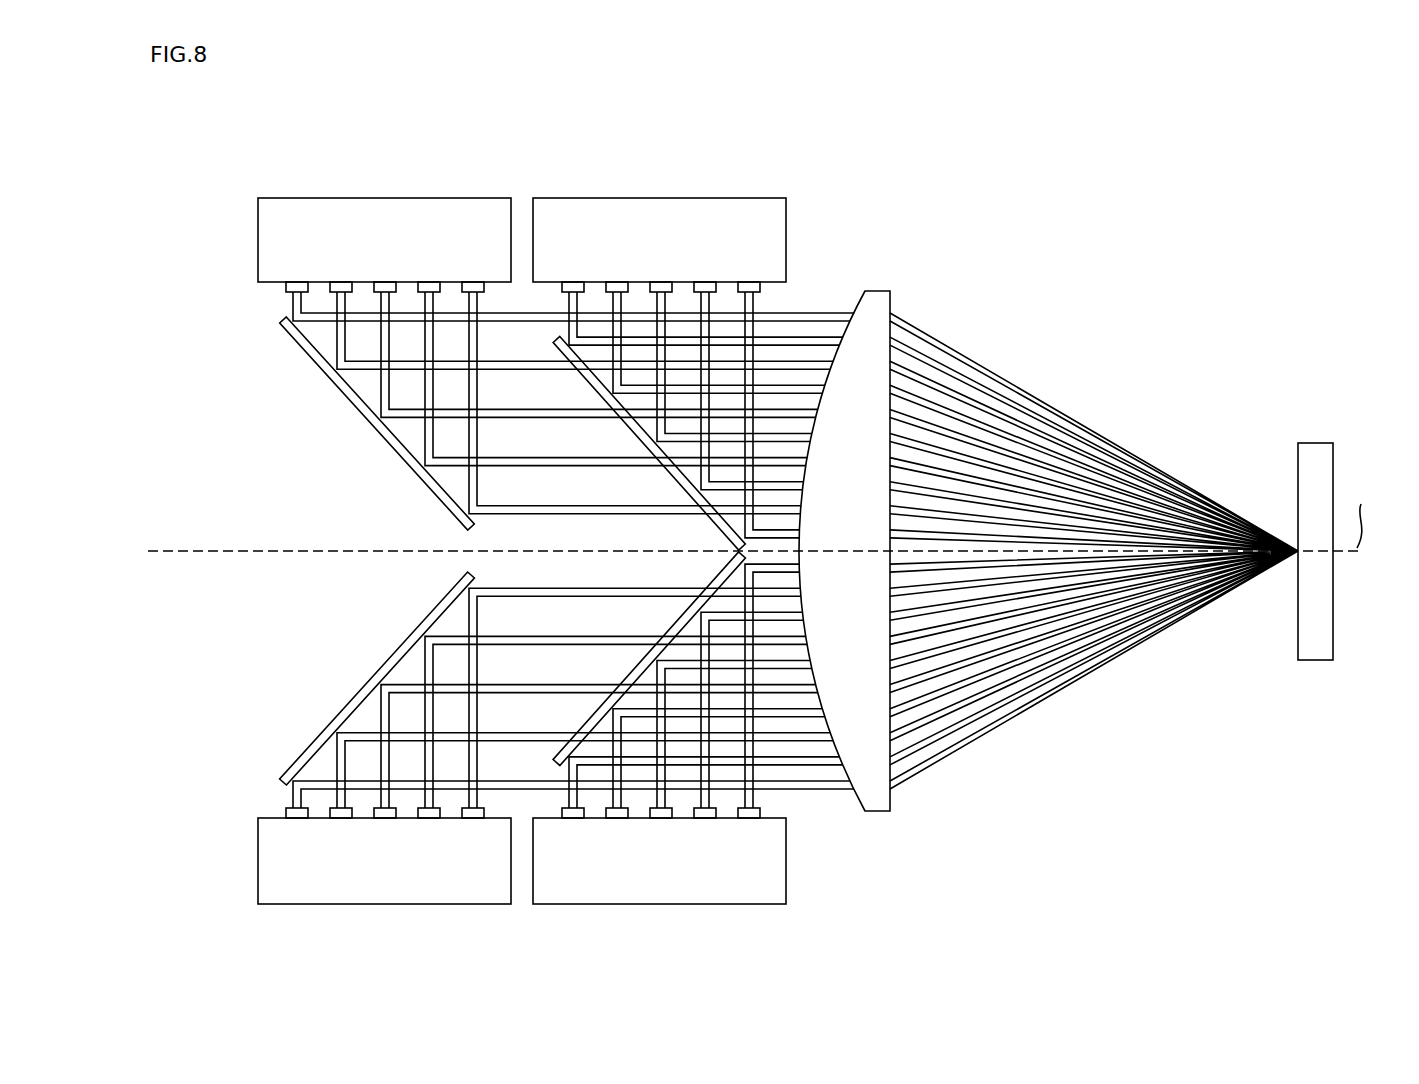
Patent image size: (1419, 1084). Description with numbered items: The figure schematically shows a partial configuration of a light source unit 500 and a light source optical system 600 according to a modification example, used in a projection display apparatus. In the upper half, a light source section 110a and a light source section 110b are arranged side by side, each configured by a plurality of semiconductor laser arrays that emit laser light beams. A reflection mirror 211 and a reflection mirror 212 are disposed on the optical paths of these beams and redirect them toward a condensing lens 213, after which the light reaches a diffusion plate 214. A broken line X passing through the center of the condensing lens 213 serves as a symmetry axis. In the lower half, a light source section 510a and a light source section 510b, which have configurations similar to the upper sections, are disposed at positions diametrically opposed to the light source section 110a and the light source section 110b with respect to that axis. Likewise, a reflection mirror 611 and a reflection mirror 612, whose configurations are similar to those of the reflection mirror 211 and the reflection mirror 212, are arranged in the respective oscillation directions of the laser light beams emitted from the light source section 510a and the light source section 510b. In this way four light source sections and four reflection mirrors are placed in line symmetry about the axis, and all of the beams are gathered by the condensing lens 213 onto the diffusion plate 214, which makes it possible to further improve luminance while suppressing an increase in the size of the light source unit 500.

The light source section 110a is at (556, 326).
The light source section 110b is at (688, 338).
The reflection mirror 211 is at (377, 423).
The reflection mirror 212 is at (649, 444).
The condensing lens 213 is at (848, 582).
The diffusion plate 214 is at (1315, 587).
The light source unit 500 is at (758, 552).
The light source section 510a is at (556, 777).
The light source section 510b is at (688, 765).
The light source optical system 600 is at (530, 759).
The reflection mirror 611 is at (377, 678).
The reflection mirror 612 is at (649, 659).